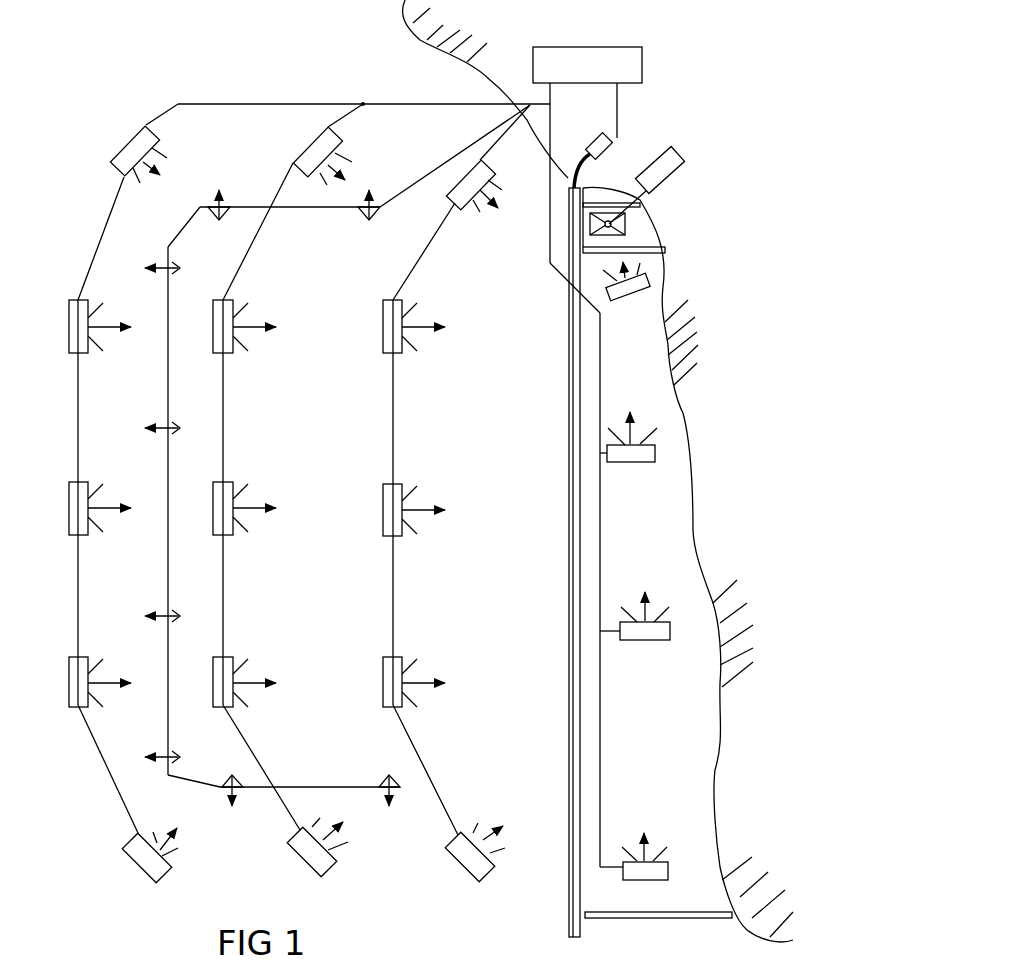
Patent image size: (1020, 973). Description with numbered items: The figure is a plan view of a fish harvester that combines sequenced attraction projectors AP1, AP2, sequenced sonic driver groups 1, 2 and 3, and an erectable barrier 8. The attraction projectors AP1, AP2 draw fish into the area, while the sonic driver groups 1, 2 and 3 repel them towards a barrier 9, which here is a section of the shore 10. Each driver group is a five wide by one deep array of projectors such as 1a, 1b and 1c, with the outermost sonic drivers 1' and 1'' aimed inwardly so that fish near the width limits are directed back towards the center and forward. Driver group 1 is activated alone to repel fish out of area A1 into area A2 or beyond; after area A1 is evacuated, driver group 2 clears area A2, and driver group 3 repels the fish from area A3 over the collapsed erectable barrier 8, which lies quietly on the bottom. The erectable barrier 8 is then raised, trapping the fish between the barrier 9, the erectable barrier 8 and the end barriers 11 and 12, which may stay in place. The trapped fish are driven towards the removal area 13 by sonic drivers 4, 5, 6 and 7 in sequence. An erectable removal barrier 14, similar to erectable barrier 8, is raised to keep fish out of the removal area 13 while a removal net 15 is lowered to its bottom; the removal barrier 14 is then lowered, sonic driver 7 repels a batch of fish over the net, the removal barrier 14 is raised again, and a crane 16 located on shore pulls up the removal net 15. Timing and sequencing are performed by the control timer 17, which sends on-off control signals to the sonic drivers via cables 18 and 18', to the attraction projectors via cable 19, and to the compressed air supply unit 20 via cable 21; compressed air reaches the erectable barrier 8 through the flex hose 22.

The sonic driver group 1 is at (57, 502).
The projector 1a is at (69, 331).
The projector 1b is at (69, 517).
The projector 1c is at (69, 689).
The outer most sonic driver 1' is at (128, 801).
The outer most sonic driver 1'' is at (122, 213).
The sonic driver group 2 is at (217, 429).
The sonic driver group 3 is at (385, 431).
The sonic driver 4 is at (668, 871).
The sonic driver 5 is at (650, 641).
The sonic driver 6 is at (640, 462).
The sonic driver 7 is at (625, 301).
The erectable barrier 8 is at (567, 675).
The barrier 9 is at (715, 717).
The shore 10 is at (751, 526).
The end barrier 11 is at (646, 919).
The end barrier 12 is at (598, 197).
The removal area 13 is at (643, 225).
The erectable removal barrier 14 is at (650, 246).
The removal net 15 is at (630, 216).
The crane 16 is at (683, 158).
The control timer 17 is at (577, 47).
The cable 18 is at (348, 100).
The cable 18' is at (564, 544).
The cable 19 is at (433, 171).
The compressed air supply unit 20 is at (613, 142).
The cable 21 is at (622, 107).
The flex hose 22 is at (579, 158).
The area A1 is at (134, 585).
The area A2 is at (318, 588).
The area A3 is at (484, 592).
The attraction projector AP1 is at (180, 744).
The attraction projector AP2 is at (176, 456).